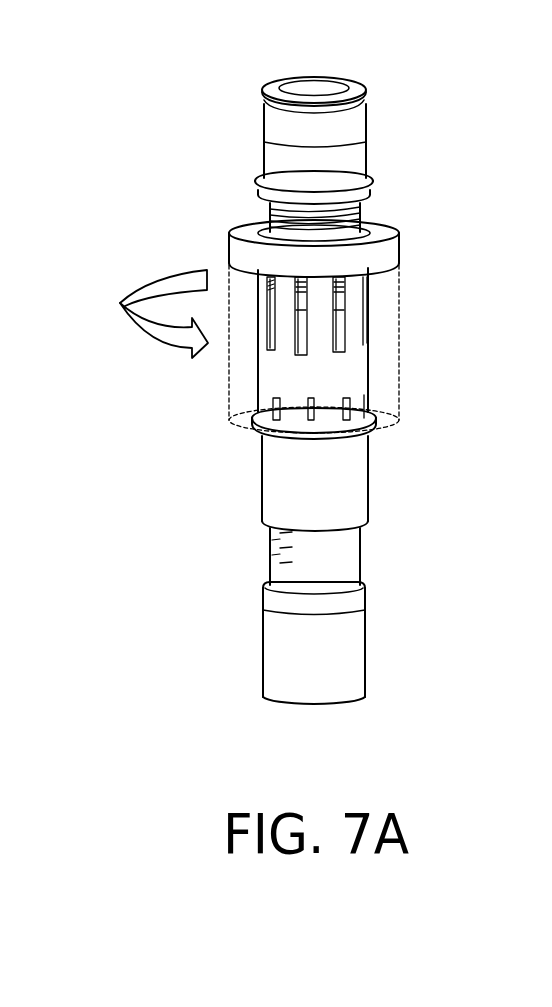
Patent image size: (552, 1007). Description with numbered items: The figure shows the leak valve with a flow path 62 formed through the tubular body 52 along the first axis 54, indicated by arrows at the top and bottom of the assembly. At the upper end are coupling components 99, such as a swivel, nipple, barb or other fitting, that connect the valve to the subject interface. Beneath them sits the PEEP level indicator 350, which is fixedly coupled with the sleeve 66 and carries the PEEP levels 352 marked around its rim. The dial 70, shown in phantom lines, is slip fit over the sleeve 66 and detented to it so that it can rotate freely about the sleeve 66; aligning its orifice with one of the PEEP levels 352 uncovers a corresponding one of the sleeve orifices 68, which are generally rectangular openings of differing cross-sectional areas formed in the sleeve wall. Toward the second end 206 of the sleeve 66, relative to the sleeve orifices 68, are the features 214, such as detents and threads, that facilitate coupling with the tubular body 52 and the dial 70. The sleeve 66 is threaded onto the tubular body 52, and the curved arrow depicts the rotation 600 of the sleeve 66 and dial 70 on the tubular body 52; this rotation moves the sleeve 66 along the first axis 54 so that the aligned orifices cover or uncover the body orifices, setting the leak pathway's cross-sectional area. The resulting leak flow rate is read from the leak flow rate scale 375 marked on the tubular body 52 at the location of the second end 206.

The flow path 62 is at (342, 68).
The components 99 is at (367, 158).
The PEEP level indicator 350 is at (400, 237).
The PEEP levels 352 is at (236, 251).
The dial 70 is at (400, 372).
The sleeve orifices 68 is at (337, 330).
The features 214 is at (312, 406).
The sleeve 66 is at (262, 474).
The second end 206 is at (368, 521).
The leak flow rate scale 375 is at (269, 563).
The tubular body 52 is at (263, 638).
The first axis 54 is at (314, 88).
The rotation 600 is at (120, 307).